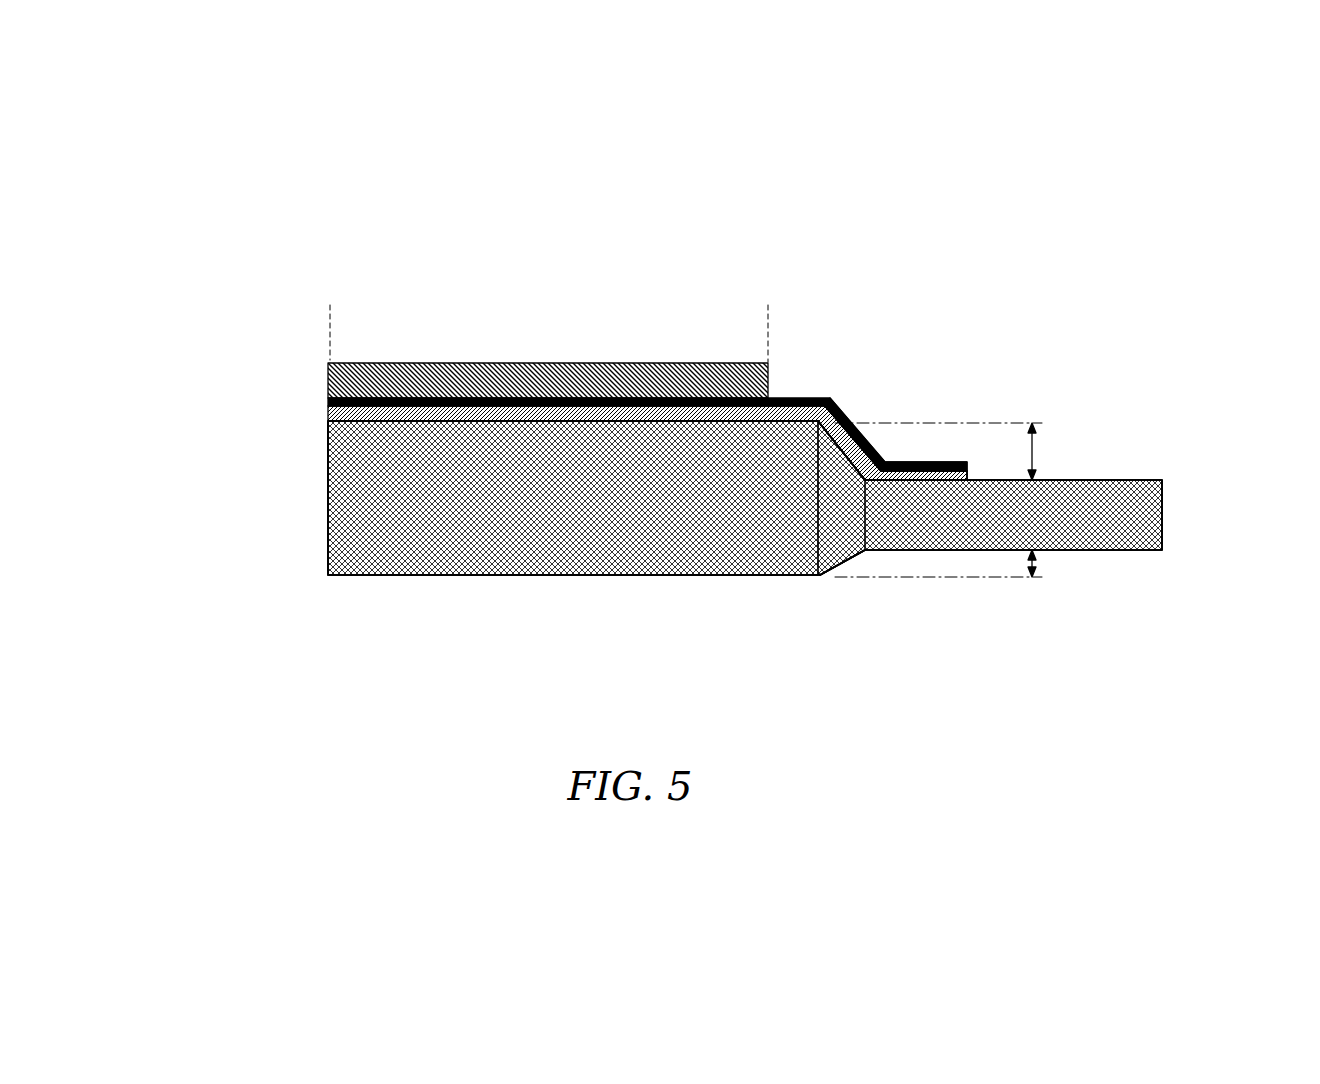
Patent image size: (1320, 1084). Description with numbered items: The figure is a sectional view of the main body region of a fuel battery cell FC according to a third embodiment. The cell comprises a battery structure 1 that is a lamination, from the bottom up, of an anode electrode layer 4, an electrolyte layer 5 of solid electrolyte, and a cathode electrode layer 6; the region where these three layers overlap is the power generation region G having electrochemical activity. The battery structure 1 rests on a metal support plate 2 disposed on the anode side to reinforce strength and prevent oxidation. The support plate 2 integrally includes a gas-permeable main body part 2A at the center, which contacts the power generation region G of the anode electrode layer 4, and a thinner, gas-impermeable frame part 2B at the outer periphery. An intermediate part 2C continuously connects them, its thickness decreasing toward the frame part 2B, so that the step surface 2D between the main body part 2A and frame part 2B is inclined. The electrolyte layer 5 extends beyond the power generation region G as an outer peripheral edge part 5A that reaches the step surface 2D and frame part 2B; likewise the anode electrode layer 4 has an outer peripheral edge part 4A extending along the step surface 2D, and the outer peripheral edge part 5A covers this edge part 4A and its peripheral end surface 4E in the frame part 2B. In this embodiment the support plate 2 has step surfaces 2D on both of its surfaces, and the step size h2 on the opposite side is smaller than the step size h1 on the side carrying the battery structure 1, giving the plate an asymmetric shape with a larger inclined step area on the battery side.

The battery structure 1 is at (545, 401).
The support plate 2 is at (1113, 480).
The main body part 2A is at (510, 538).
The frame part 2B is at (1162, 521).
The intermediate part 2C is at (830, 482).
The step surface 2D is at (860, 432).
The anode electrode layer 4 is at (327, 416).
The outer peripheral edge part 4A is at (838, 398).
The peripheral end surface 4E is at (913, 483).
The electrolyte layer 5 is at (327, 401).
The outer peripheral edge part 5A is at (928, 462).
The cathode electrode layer 6 is at (327, 370).
The power generation region G is at (330, 305).
The fuel battery cell FC is at (812, 311).
The step size h1 is at (1034, 455).
The step size h2 is at (1035, 566).